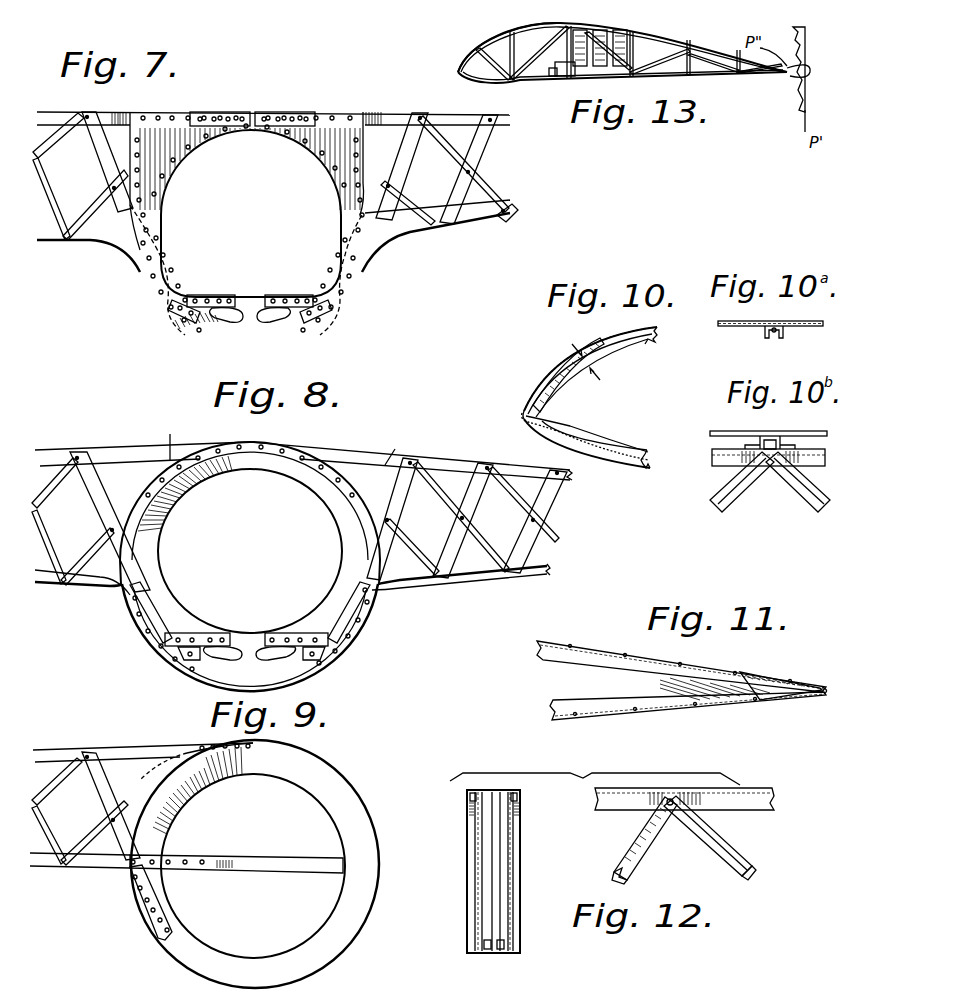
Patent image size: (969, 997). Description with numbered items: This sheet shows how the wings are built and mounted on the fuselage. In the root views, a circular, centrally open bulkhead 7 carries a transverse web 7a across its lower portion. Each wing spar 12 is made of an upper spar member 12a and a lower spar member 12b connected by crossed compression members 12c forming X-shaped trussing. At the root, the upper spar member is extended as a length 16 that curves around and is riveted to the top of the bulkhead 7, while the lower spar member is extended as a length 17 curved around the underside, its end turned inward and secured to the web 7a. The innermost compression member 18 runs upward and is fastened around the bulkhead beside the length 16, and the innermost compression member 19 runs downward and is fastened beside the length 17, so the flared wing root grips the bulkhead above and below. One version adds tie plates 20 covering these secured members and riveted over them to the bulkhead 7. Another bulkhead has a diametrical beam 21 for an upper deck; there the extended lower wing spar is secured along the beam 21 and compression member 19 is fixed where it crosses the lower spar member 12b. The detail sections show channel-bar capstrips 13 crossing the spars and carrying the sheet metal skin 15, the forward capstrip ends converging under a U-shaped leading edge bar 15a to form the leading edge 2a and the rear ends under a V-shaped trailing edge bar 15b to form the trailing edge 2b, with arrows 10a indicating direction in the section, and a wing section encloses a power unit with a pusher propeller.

In FIG. 7, the bulkhead 7 is at (250, 132).
In FIG. 8, the bulkhead 7 is at (338, 520).
In FIG. 9, the bulkhead 7 is at (323, 806).
In FIG. 7, the transverse web 7a is at (255, 298).
In FIG. 8, the transverse web 7a is at (246, 636).
In FIG. 7, the wing spar 12 is at (276, 176).
In FIG. 13, the wing spar 12 is at (514, 50).
In FIG. 8, the wing spar 12 is at (572, 558).
In FIG. 7, the upper spar member 12a is at (75, 105).
In FIG. 12, the upper spar member 12a is at (507, 790).
In FIG. 8, the upper spar member 12a is at (72, 443).
In FIG. 9, the upper spar member 12a is at (60, 752).
In FIG. 7, the lower spar member 12b is at (85, 240).
In FIG. 12, the lower spar member 12b is at (490, 954).
In FIG. 8, the lower spar member 12b is at (90, 585).
In FIG. 9, the lower spar member 12b is at (106, 868).
In FIG. 12, the compression members 12c is at (468, 888).
In FIG. 8, the compression members 12c is at (62, 530).
In FIG. 9, the compression members 12c is at (72, 815).
In FIG. 13, the capstrips 13 is at (663, 40).
In FIG. 10, the capstrips 13 is at (645, 346).
In FIG. 10A, the capstrips 13 is at (767, 338).
In FIG. 10B, the capstrips 13 is at (780, 436).
In FIG. 11, the capstrips 13 is at (590, 704).
In FIG. 10, the skin or covering 15 is at (562, 375).
In FIG. 10A, the skin or covering 15 is at (727, 323).
In FIG. 10B, the skin or covering 15 is at (728, 431).
In FIG. 11, the skin or covering 15 is at (606, 657).
In FIG. 10, the leading edge bar 15a is at (552, 408).
In FIG. 11, the trailing edge bar 15b is at (800, 668).
In FIG. 7, the upper length 16 is at (272, 112).
In FIG. 8, the upper length 16 is at (222, 450).
In FIG. 9, the upper length 16 is at (198, 748).
In FIG. 8, the lower length 17 is at (178, 660).
In FIG. 8, the compression member 18 is at (282, 440).
In FIG. 8, the compression member 19 is at (145, 618).
In FIG. 7, the tie plates 20 is at (162, 120).
In FIG. 9, the beam 21 is at (283, 870).
In FIG. 13, the leading edge 2a is at (458, 72).
In FIG. 10, the leading edge 2a is at (524, 414).
In FIG. 13, the trailing edge 2b is at (783, 76).
In FIG. 11, the trailing edge 2b is at (822, 694).
In FIG. 10, the arrow direction 10a is at (608, 362).